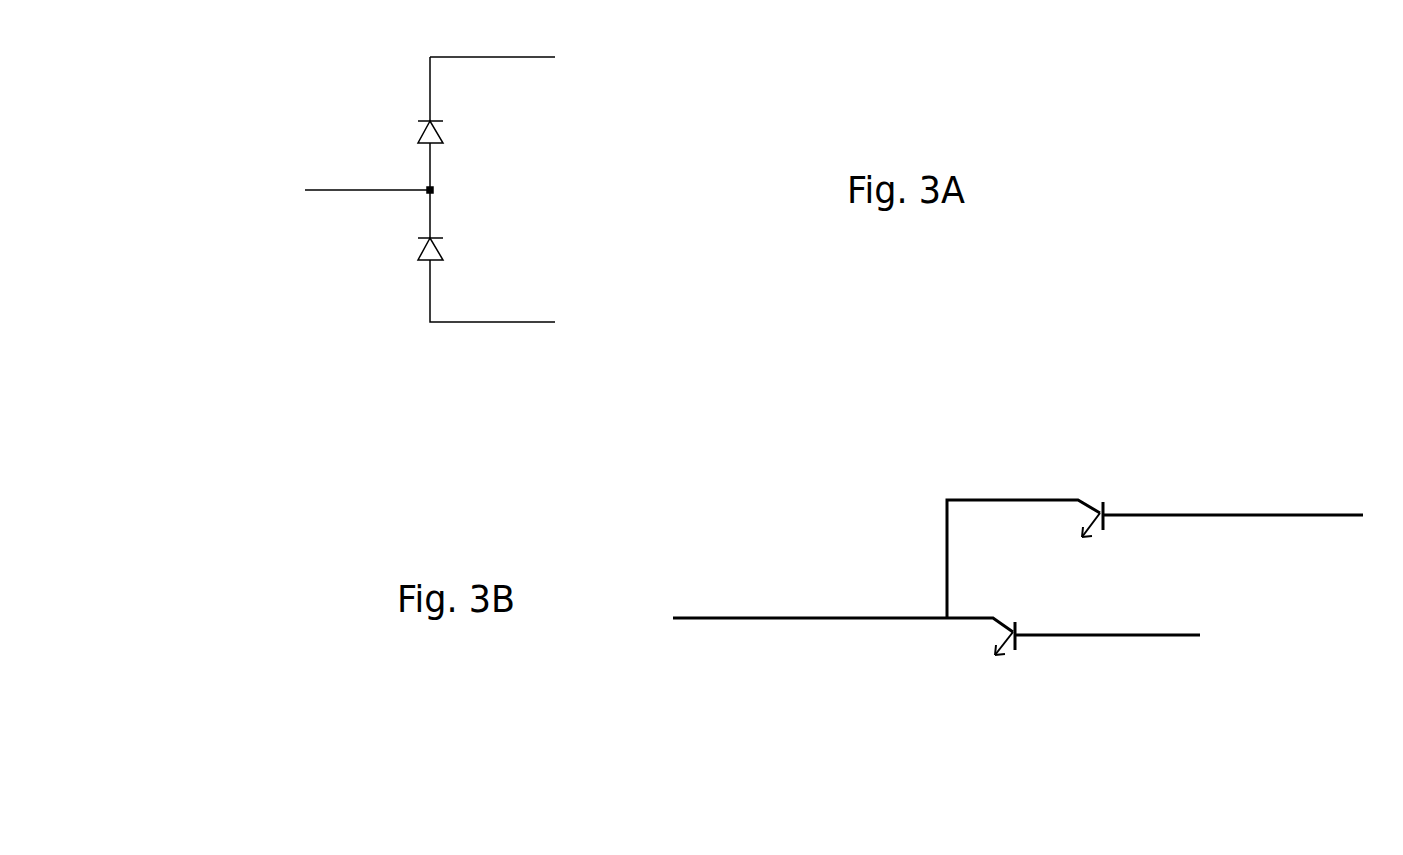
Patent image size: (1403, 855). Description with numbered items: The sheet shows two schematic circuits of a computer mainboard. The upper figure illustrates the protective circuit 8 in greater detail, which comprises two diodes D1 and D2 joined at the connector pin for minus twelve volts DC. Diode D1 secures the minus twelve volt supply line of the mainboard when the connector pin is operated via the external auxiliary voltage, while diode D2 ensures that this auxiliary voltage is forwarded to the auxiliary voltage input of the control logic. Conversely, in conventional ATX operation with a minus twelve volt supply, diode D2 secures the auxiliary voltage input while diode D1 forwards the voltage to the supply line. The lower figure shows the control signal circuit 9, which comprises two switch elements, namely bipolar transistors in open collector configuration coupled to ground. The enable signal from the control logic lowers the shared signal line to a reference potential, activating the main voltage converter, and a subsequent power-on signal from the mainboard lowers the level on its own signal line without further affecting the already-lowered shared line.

In FIG. 3A, the protective circuit 8 is at (268, 297).
In FIG. 3B, the control signal circuit 9 is at (1233, 388).
In FIG. 3A, the diode D1 is at (422, 250).
In FIG. 3A, the diode D2 is at (422, 133).